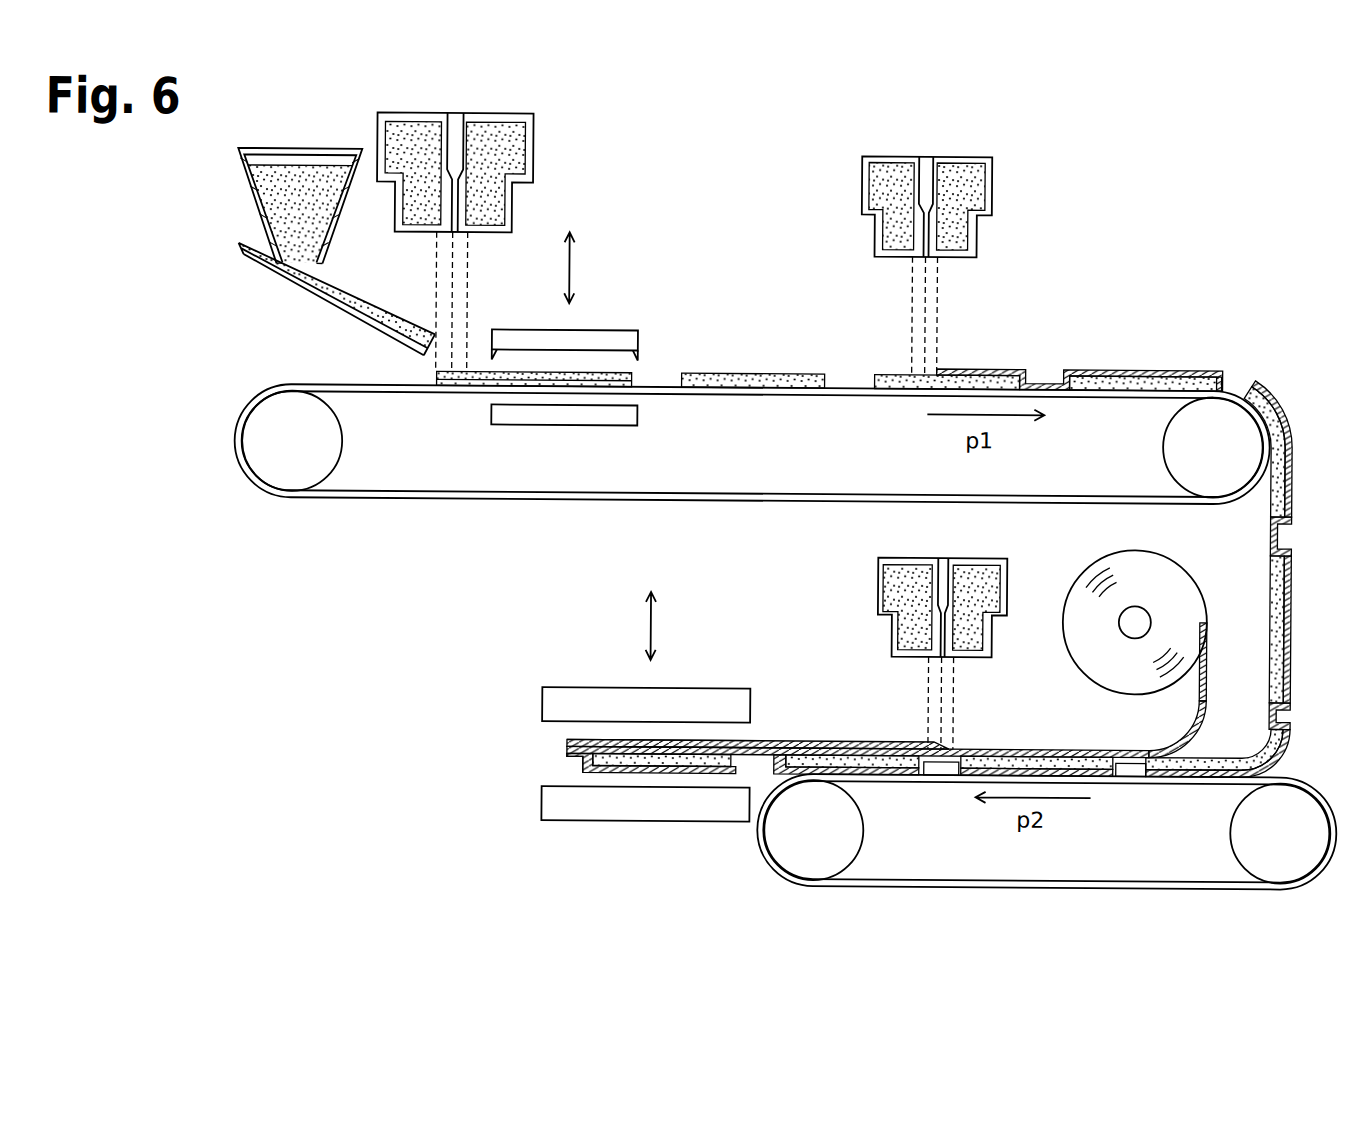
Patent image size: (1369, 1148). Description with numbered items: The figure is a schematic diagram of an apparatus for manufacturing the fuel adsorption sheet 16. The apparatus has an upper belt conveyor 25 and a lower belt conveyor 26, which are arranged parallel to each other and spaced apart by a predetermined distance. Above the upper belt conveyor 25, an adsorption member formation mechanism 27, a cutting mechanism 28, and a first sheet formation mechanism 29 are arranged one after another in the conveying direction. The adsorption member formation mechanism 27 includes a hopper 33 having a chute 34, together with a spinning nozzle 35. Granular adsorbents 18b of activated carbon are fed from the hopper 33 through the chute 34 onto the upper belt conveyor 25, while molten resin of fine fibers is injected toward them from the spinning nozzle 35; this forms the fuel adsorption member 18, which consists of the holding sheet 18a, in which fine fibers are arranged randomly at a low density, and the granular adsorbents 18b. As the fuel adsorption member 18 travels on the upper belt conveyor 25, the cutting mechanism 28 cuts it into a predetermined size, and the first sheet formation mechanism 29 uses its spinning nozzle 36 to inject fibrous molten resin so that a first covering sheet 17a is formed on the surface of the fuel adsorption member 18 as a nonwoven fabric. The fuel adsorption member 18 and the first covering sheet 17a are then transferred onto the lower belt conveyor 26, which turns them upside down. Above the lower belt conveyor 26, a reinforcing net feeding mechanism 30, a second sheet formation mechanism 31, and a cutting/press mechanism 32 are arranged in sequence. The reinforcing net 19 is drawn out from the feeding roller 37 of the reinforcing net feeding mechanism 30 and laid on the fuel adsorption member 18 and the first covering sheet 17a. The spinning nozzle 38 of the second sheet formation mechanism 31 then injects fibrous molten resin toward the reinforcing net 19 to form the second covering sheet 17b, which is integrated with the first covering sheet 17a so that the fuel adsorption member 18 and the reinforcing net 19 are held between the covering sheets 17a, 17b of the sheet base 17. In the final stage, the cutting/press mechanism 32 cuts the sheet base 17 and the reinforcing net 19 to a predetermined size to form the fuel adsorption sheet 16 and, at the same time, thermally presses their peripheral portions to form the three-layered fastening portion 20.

The fuel adsorption sheet 16 is at (568, 742).
The sheet base 17 is at (805, 741).
The first covering sheet 17a is at (1001, 368).
The second covering sheet 17b is at (862, 742).
The fuel adsorption member 18 is at (627, 373).
The holding sheet 18a is at (447, 388).
The granular adsorbents 18b is at (360, 305).
The reinforcing net 19 is at (1208, 668).
The fastening portion 20 is at (582, 767).
The upper belt conveyor 25 is at (556, 502).
The lower belt conveyor 26 is at (960, 886).
The adsorption member formation mechanism 27 is at (317, 101).
The cutting mechanism 28 is at (611, 331).
The first sheet formation mechanism 29 is at (993, 135).
The reinforcing net feeding mechanism 30 is at (1078, 575).
The second sheet formation mechanism 31 is at (866, 539).
The cutting/press mechanism 32 is at (576, 689).
The hopper 33 is at (244, 181).
The chute 34 is at (278, 280).
The spinning nozzle 35 is at (488, 115).
The spinning nozzle 36 is at (952, 156).
The feeding roller 37 is at (1148, 608).
The spinning nozzle 38 is at (985, 557).